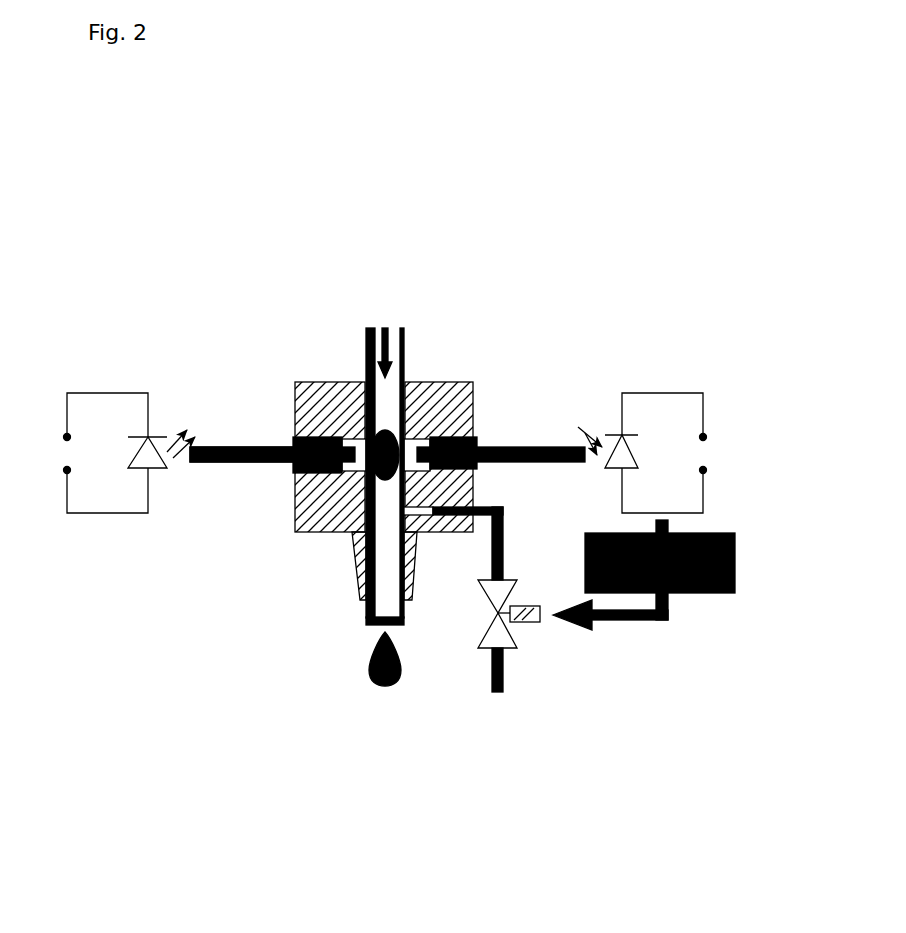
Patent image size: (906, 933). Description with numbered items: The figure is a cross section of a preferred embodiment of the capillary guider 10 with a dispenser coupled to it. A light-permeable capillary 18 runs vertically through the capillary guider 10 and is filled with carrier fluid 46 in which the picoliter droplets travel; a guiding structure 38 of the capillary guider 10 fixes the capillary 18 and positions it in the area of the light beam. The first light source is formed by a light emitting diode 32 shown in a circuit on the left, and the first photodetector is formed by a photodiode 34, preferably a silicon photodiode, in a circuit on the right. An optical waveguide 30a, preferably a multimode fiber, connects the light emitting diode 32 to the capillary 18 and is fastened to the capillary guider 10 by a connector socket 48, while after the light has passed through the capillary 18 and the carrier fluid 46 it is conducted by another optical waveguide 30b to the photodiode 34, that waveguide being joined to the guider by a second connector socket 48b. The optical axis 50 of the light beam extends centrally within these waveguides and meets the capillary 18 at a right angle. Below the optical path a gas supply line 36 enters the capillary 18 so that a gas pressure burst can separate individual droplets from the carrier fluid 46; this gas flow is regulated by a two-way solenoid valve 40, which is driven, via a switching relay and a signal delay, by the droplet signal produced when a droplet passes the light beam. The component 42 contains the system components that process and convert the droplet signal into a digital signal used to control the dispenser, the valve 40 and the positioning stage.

The capillary guider 10 is at (313, 393).
The capillary 18 is at (332, 342).
The optical waveguide 30a is at (250, 466).
The optical waveguide 30b is at (504, 446).
The light emitting diode 32 is at (132, 405).
The photodiode 34 is at (648, 413).
The gas supply line 36 is at (505, 530).
The guiding structure 38 is at (318, 478).
The two-way solenoid valve 40 is at (523, 632).
The signal processing component 42 is at (704, 595).
The carrier fluid 46 is at (357, 403).
The connector socket 48 is at (298, 440).
The second connector socket 48b is at (434, 441).
The optical axis 50 is at (210, 456).